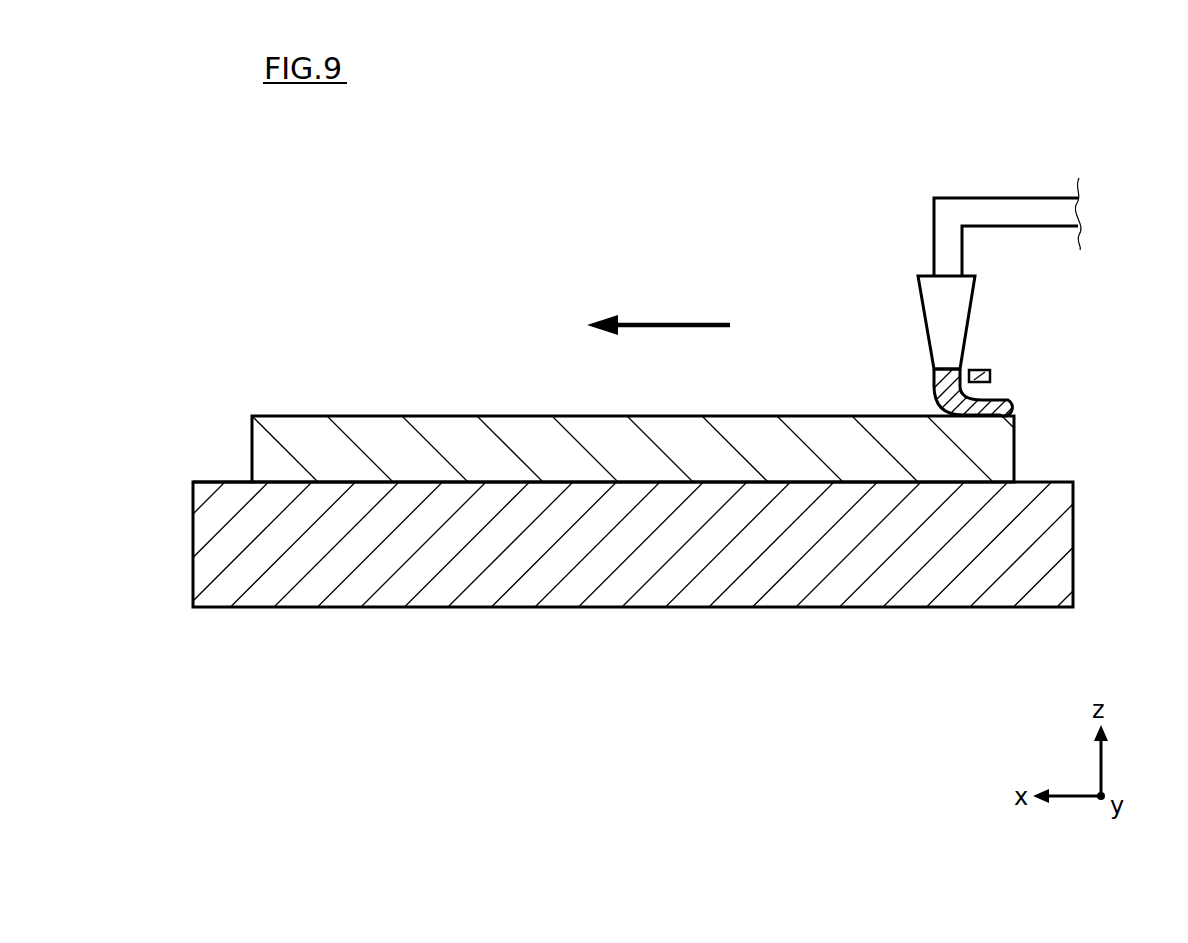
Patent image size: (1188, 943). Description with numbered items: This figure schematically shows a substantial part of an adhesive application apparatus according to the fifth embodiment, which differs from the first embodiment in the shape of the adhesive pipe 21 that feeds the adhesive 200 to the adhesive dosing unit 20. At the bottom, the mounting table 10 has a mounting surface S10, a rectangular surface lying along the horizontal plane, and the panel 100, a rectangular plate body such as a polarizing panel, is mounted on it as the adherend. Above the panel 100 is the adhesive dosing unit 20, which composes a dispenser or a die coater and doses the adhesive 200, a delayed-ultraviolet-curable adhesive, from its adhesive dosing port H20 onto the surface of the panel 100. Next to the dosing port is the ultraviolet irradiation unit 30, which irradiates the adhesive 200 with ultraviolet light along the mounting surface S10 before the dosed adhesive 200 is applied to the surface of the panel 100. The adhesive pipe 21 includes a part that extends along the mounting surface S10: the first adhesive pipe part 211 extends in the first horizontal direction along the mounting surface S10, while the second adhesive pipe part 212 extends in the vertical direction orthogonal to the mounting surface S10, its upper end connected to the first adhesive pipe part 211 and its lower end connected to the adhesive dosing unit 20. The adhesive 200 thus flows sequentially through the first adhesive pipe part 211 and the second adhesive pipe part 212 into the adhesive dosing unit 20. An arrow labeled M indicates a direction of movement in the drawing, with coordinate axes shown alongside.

The adhesive pipe 21 is at (1038, 133).
The first adhesive pipe part 211 is at (1008, 212).
The second adhesive pipe part 212 is at (940, 237).
The adhesive dosing unit 20 is at (955, 317).
The adhesive dosing port H20 is at (930, 372).
The ultraviolet irradiation unit 30 is at (992, 376).
The adhesive 200 is at (1010, 405).
The panel 100 is at (1005, 448).
The mounting table 10 is at (1063, 543).
The mounting surface S10 is at (233, 487).
The movement direction M is at (656, 324).